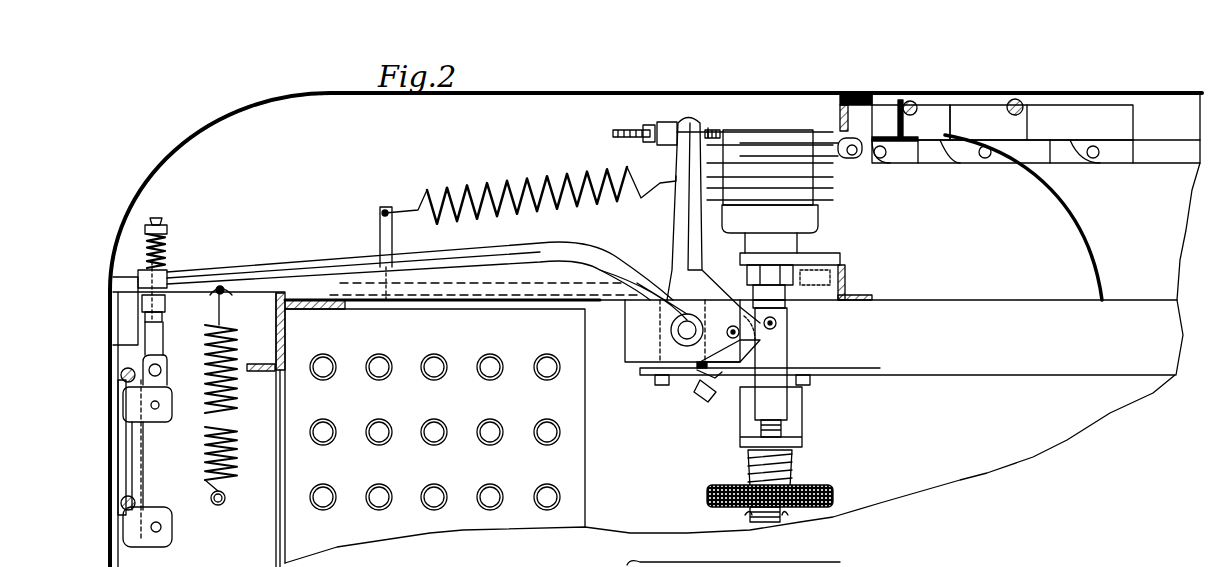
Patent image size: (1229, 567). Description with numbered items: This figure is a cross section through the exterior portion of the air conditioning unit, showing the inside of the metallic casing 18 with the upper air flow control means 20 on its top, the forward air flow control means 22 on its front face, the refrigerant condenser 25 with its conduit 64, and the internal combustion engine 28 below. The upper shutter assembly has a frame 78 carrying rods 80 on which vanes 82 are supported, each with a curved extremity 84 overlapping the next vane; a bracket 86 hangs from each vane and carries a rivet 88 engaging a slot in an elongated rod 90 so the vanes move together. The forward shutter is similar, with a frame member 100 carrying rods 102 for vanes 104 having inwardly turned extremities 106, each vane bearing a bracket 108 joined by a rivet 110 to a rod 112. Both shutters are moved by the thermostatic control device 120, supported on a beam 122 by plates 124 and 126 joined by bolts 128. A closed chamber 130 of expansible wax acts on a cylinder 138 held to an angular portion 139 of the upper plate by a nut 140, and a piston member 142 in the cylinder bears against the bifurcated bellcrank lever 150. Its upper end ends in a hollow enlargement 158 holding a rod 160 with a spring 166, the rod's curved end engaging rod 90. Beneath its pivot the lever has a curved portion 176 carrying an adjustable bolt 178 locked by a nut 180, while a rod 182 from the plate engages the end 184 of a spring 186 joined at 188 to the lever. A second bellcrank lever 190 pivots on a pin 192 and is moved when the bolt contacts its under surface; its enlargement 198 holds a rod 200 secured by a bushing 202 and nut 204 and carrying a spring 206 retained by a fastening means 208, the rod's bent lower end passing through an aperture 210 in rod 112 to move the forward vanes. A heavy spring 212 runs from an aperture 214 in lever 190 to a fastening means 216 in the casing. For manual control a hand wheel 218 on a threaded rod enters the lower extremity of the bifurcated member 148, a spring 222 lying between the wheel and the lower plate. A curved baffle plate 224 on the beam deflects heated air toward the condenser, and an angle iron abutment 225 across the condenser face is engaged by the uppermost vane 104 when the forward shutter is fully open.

The metallic casing 18 is at (660, 93).
The upper air flow control means 20 is at (876, 88).
The forward air flow control means 22 is at (112, 385).
The refrigerant condenser 25 is at (585, 455).
The internal combustion engine 28 is at (930, 478).
The conduit 64 is at (432, 354).
The frame 78 is at (848, 93).
The rods 80 is at (910, 100).
The vane 82 is at (960, 98).
The curved extremity 84 is at (1013, 99).
The bracket 86 is at (1043, 133).
The rivet 88 is at (1095, 158).
The elongated rod 90 is at (1186, 160).
The frame member 100 is at (125, 300).
The rods 102 is at (130, 368).
The vanes 104 is at (118, 452).
The inwardly turned extremity 106 is at (145, 496).
The bracket 108 is at (150, 440).
The rivet 110 is at (159, 406).
The rod 112 is at (160, 390).
The control device 120 is at (870, 208).
The beam 122 is at (944, 312).
The plate 124 is at (840, 562).
The plate 126 is at (840, 380).
The bolts 128 is at (678, 565).
The closed chamber 130 is at (818, 222).
The cylinder 138 is at (785, 300).
The angular portion 139 is at (840, 256).
The nut 140 is at (845, 275).
The movable piston member 142 is at (776, 323).
The bifurcated member 148 is at (787, 367).
The bifurcated bellcrank lever member 150 is at (676, 226).
The hollow enlargement 158 is at (688, 120).
The rod 160 is at (842, 136).
The spring 166 is at (718, 130).
The curved portion 176 is at (724, 388).
The adjustable bolt 178 is at (706, 404).
The nut 180 is at (698, 390).
The rod 182 is at (380, 240).
The spring end 184 is at (384, 208).
The spring 186 is at (476, 188).
The spring attachment point 188 is at (672, 196).
The second bellcrank lever 190 is at (268, 266).
The pin 192 is at (672, 347).
The enlargement 198 is at (170, 276).
The rod 200 is at (162, 224).
The bushing 202 is at (168, 302).
The nut 204 is at (165, 318).
The spring 206 is at (168, 250).
The fastening means 208 is at (152, 216).
The aperture 210 is at (162, 371).
The heavy spring 212 is at (234, 392).
The aperture 214 is at (230, 295).
The fastening means 216 is at (226, 497).
The hand wheel 218 is at (818, 485).
The spring 222 is at (796, 462).
The curved baffle plate 224 is at (1100, 250).
The abutment 225 is at (276, 364).